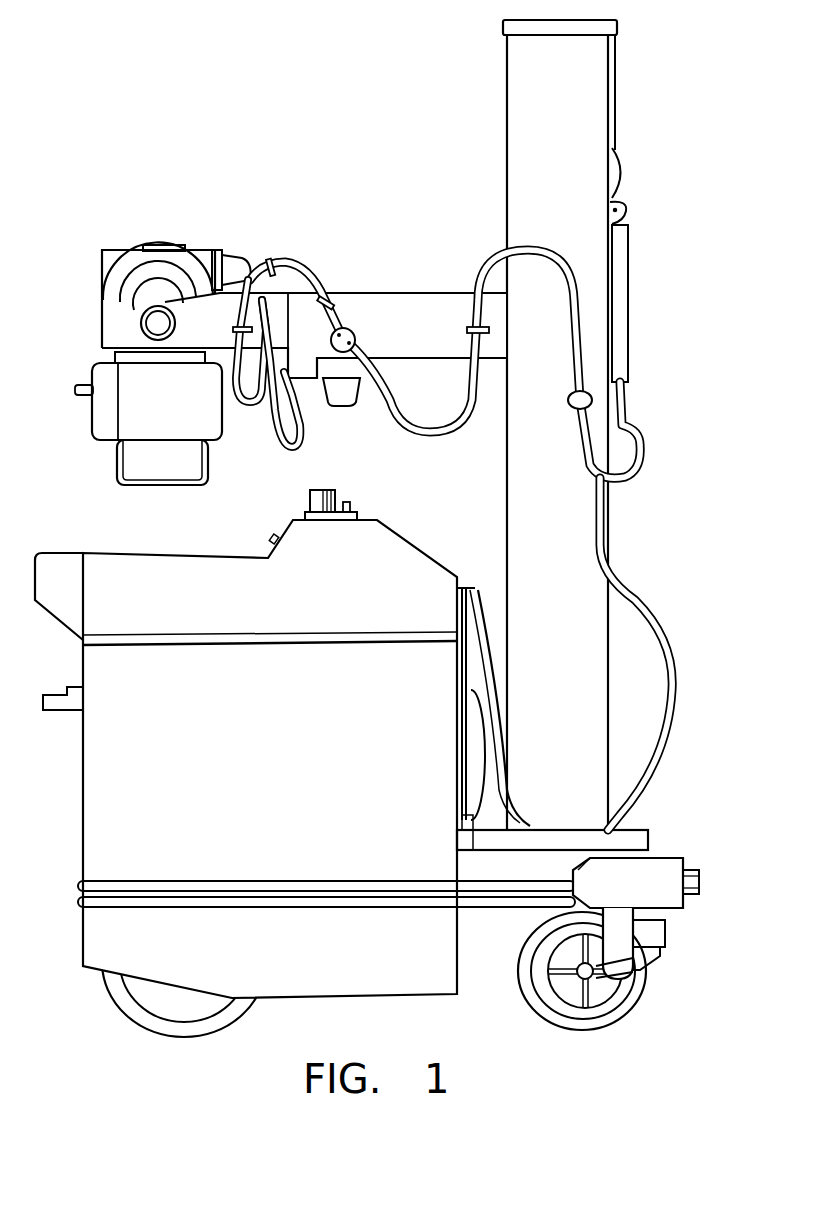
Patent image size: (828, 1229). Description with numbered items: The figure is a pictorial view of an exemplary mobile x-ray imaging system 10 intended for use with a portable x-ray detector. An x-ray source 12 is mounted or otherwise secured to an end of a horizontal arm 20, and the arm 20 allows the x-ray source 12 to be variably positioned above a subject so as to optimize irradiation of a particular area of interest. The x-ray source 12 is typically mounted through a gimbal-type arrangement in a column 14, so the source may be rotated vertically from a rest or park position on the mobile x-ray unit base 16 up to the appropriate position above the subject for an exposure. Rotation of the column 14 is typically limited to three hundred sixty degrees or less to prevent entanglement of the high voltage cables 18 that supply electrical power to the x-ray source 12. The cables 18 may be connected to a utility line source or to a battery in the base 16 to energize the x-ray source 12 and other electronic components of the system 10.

The mobile x-ray imaging system 10 is at (654, 176).
The x-ray source 12 is at (157, 286).
The column 14 is at (564, 124).
The mobile x-ray unit base 16 is at (239, 739).
The high voltage cables 18 is at (638, 593).
The horizontal arm 20 is at (423, 308).